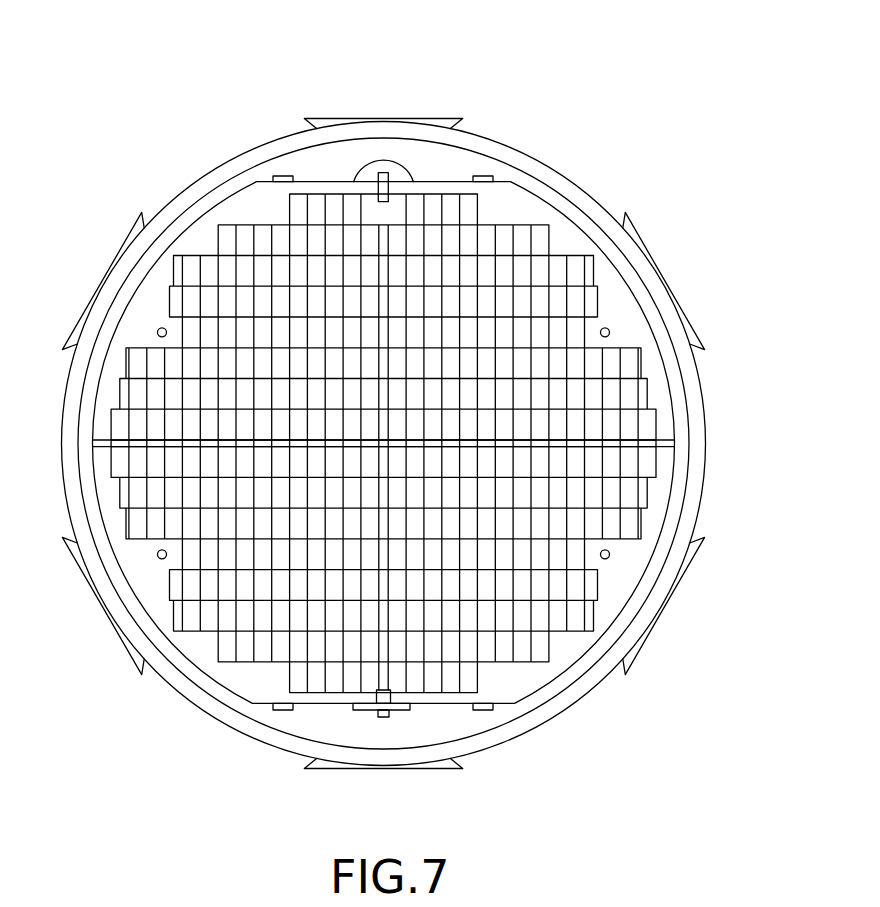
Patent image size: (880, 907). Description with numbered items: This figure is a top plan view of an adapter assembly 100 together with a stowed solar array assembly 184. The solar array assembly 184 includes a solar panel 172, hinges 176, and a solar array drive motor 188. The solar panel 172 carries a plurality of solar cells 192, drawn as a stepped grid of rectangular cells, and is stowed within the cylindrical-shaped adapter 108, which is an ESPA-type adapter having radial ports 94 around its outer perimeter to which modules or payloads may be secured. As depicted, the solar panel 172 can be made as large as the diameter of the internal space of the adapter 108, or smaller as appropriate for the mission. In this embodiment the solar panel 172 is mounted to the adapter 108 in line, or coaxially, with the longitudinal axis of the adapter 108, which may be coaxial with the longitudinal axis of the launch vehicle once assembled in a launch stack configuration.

The adapter assembly 100 is at (650, 102).
The radial ports 94 is at (139, 216).
The adapter 108 is at (704, 432).
The solar panel 172 is at (636, 330).
The hinges 176 is at (283, 176).
The solar array assembly 184 is at (440, 124).
The solar array drive motor 188 is at (376, 160).
The solar cells 192 is at (644, 457).